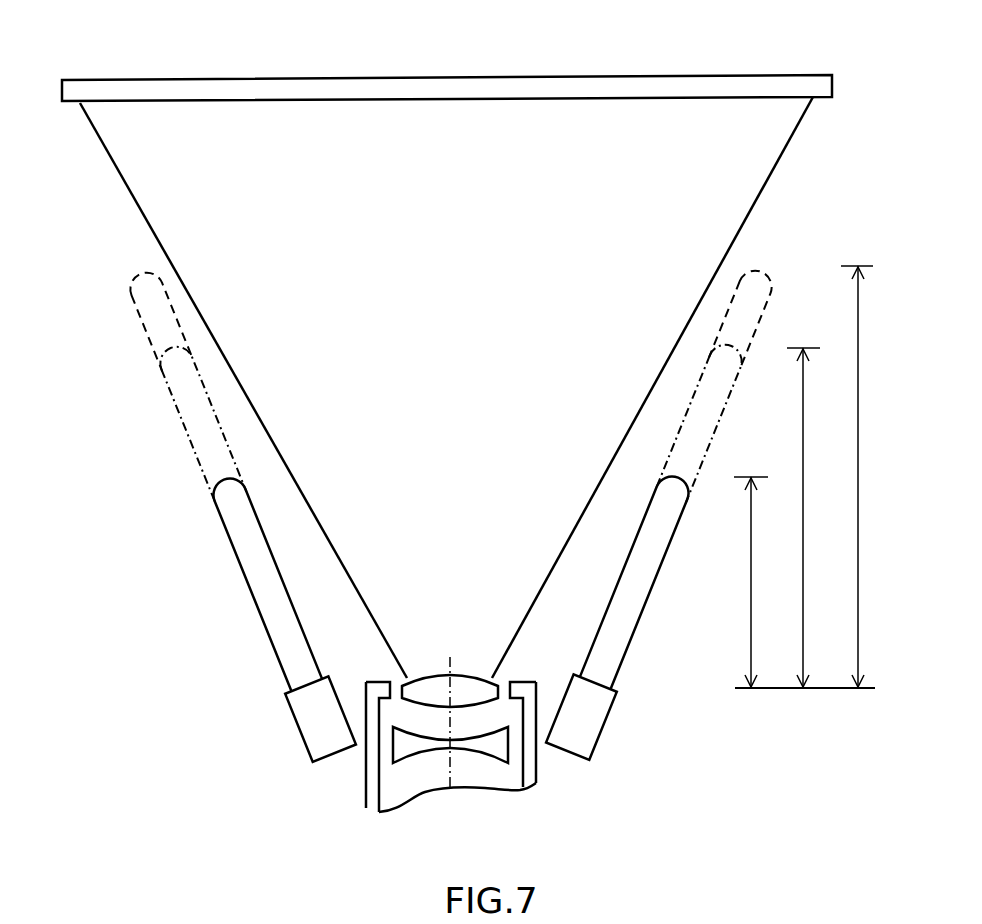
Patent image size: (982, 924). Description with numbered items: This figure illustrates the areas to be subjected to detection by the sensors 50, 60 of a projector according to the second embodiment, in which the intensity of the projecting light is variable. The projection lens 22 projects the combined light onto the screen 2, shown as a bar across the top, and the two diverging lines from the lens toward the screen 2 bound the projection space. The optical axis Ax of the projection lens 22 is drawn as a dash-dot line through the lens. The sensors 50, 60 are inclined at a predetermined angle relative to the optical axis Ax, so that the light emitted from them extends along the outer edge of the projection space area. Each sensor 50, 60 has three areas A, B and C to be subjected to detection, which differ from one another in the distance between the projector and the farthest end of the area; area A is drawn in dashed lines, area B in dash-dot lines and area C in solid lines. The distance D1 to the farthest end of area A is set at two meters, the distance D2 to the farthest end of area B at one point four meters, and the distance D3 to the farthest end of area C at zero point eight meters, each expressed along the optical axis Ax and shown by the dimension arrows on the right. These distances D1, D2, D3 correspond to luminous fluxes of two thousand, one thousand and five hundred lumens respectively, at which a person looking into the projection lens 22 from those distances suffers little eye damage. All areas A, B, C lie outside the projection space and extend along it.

The screen 2 is at (605, 75).
The projection lens 22 is at (366, 807).
The sensor 50 is at (295, 730).
The sensor 60 is at (610, 727).
The area to be subjected to detection A is at (142, 323).
The area to be subjected to detection B is at (186, 432).
The area to be subjected to detection C is at (232, 553).
The optical axis Ax is at (449, 704).
The distance D1 is at (872, 477).
The distance D2 is at (818, 518).
The distance D3 is at (766, 582).